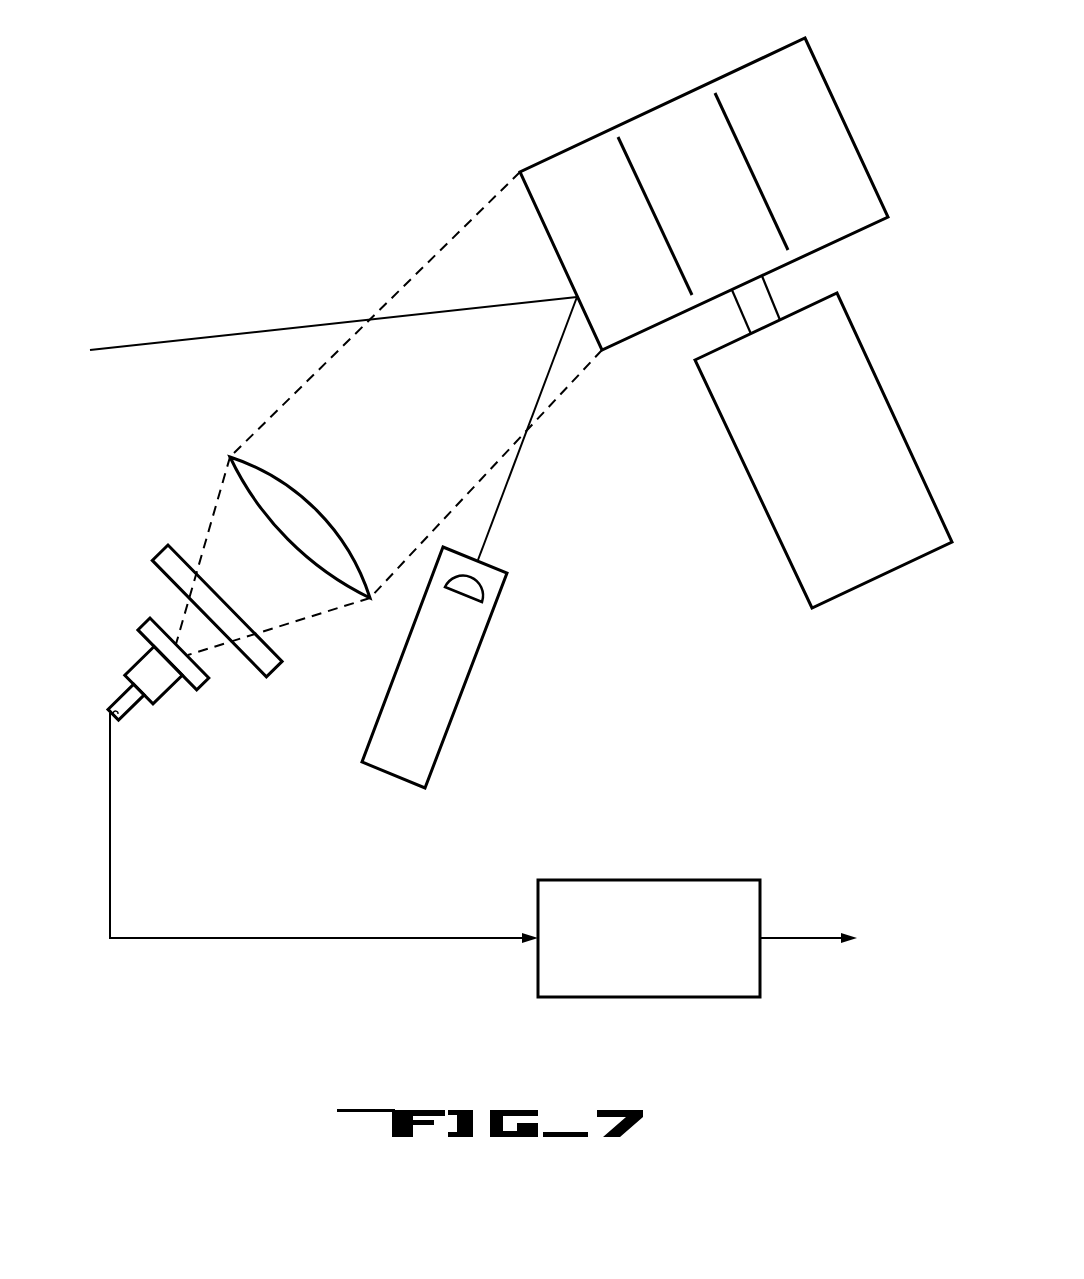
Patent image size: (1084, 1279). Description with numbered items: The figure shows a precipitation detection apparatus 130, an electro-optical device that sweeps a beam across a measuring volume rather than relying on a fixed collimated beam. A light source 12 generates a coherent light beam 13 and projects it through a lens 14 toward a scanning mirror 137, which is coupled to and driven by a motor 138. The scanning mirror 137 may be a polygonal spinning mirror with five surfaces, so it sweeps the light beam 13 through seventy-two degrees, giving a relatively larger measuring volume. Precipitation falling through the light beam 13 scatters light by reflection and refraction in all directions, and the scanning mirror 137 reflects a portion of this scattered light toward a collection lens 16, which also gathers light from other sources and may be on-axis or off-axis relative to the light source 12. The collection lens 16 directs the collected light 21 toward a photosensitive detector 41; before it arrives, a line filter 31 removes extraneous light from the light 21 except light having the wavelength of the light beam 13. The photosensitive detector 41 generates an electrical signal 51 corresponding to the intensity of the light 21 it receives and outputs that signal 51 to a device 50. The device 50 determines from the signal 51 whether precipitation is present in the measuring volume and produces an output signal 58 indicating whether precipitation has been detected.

The precipitation detection apparatus 130 is at (262, 131).
The scanning mirror 137 is at (818, 95).
The motor 138 is at (865, 377).
The light beam 13 is at (203, 337).
The collection lens 16 is at (252, 477).
The line filter 31 is at (163, 548).
The light 21 is at (187, 612).
The photosensitive detector 41 is at (140, 672).
The light source 12 is at (445, 703).
The lens 14 is at (473, 588).
The electrical signal 51 is at (217, 938).
The device 50 is at (688, 880).
The output signal 58 is at (803, 937).